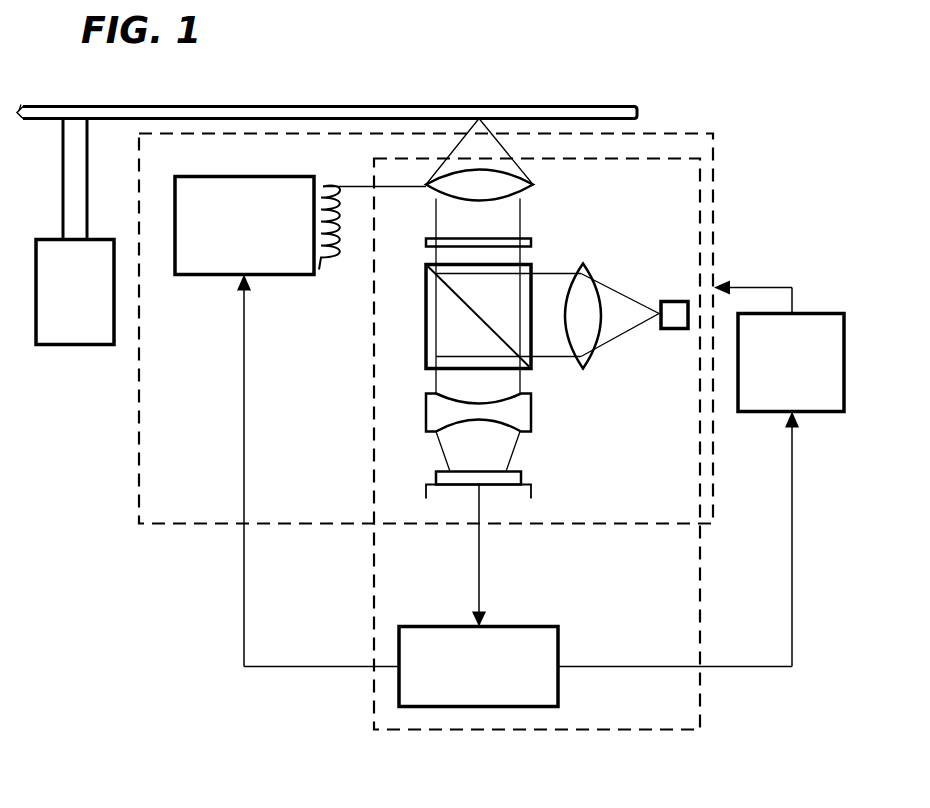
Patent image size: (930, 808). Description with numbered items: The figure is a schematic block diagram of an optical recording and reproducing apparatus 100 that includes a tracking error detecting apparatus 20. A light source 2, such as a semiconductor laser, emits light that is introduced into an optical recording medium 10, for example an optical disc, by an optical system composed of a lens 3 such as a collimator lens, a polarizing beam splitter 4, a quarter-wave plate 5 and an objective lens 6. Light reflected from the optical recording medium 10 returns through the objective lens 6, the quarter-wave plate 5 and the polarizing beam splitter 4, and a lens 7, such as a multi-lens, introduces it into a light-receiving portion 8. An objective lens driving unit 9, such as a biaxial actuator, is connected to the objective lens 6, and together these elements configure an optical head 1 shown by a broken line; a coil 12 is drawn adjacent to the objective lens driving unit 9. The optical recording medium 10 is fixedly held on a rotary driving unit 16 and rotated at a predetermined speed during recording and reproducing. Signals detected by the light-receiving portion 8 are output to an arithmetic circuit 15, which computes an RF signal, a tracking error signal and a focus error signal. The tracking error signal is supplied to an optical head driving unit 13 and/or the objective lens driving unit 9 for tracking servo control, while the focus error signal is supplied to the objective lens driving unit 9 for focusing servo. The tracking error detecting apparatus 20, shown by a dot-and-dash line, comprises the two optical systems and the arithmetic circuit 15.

The optical head 1 is at (713, 155).
The light source 2 is at (676, 298).
The lens 3 is at (586, 265).
The polarizing beam splitter 4 is at (530, 268).
The quarter-wave plate 5 is at (530, 241).
The objective lens 6 is at (532, 183).
The lens 7 is at (532, 412).
The light-receiving portion 8 is at (521, 478).
The objective lens driving unit 9 is at (267, 275).
The optical recording medium 10 is at (595, 105).
The coil 12 is at (321, 262).
The optical head driving unit 13 is at (825, 412).
The arithmetic circuit 15 is at (540, 625).
The rotary driving unit 16 is at (67, 345).
The tracking error detecting apparatus 20 is at (699, 693).
The optical recording and reproducing apparatus 100 is at (545, 780).